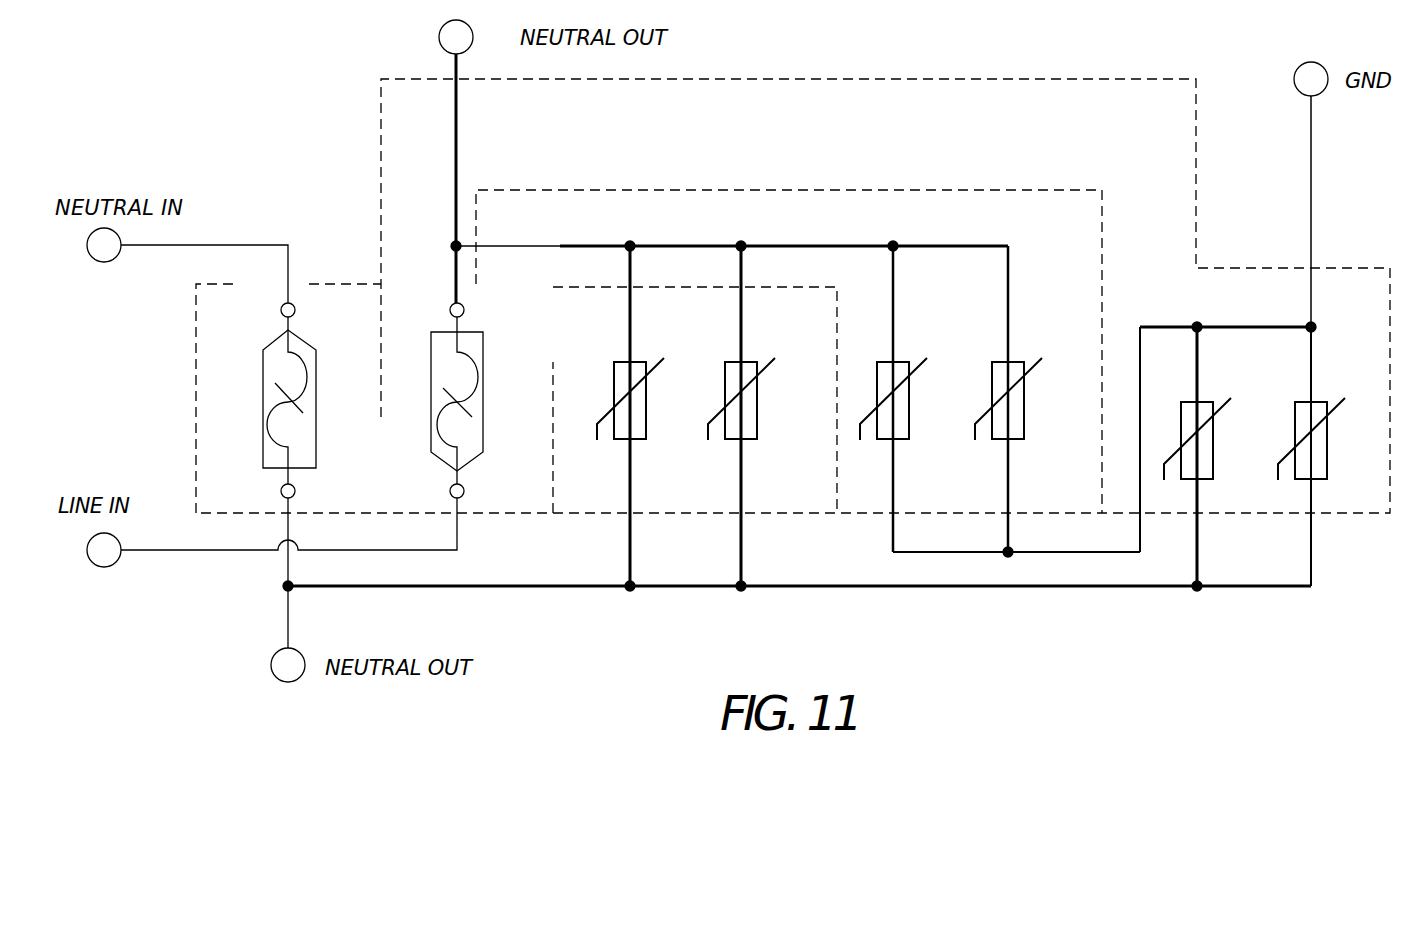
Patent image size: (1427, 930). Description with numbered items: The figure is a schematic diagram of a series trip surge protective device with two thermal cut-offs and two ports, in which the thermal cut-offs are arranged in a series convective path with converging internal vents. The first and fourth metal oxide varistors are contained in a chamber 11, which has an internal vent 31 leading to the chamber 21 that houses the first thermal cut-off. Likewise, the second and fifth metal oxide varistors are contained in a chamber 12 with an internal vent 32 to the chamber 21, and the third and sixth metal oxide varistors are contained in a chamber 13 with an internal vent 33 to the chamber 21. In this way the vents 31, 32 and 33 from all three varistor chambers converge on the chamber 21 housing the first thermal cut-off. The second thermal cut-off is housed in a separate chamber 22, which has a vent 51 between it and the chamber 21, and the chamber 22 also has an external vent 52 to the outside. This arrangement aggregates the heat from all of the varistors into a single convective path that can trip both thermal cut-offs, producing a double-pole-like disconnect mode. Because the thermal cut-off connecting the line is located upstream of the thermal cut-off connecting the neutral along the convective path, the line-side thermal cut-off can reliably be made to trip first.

The chamber 11 is at (701, 484).
The chamber 12 is at (970, 286).
The chamber 13 is at (1251, 307).
The chamber 21 is at (524, 484).
The chamber 22 is at (359, 336).
The internal vent 31 is at (602, 327).
The internal vent 32 is at (519, 218).
The internal vent 33 is at (424, 145).
The vent 51 is at (355, 444).
The external vent 52 is at (250, 285).